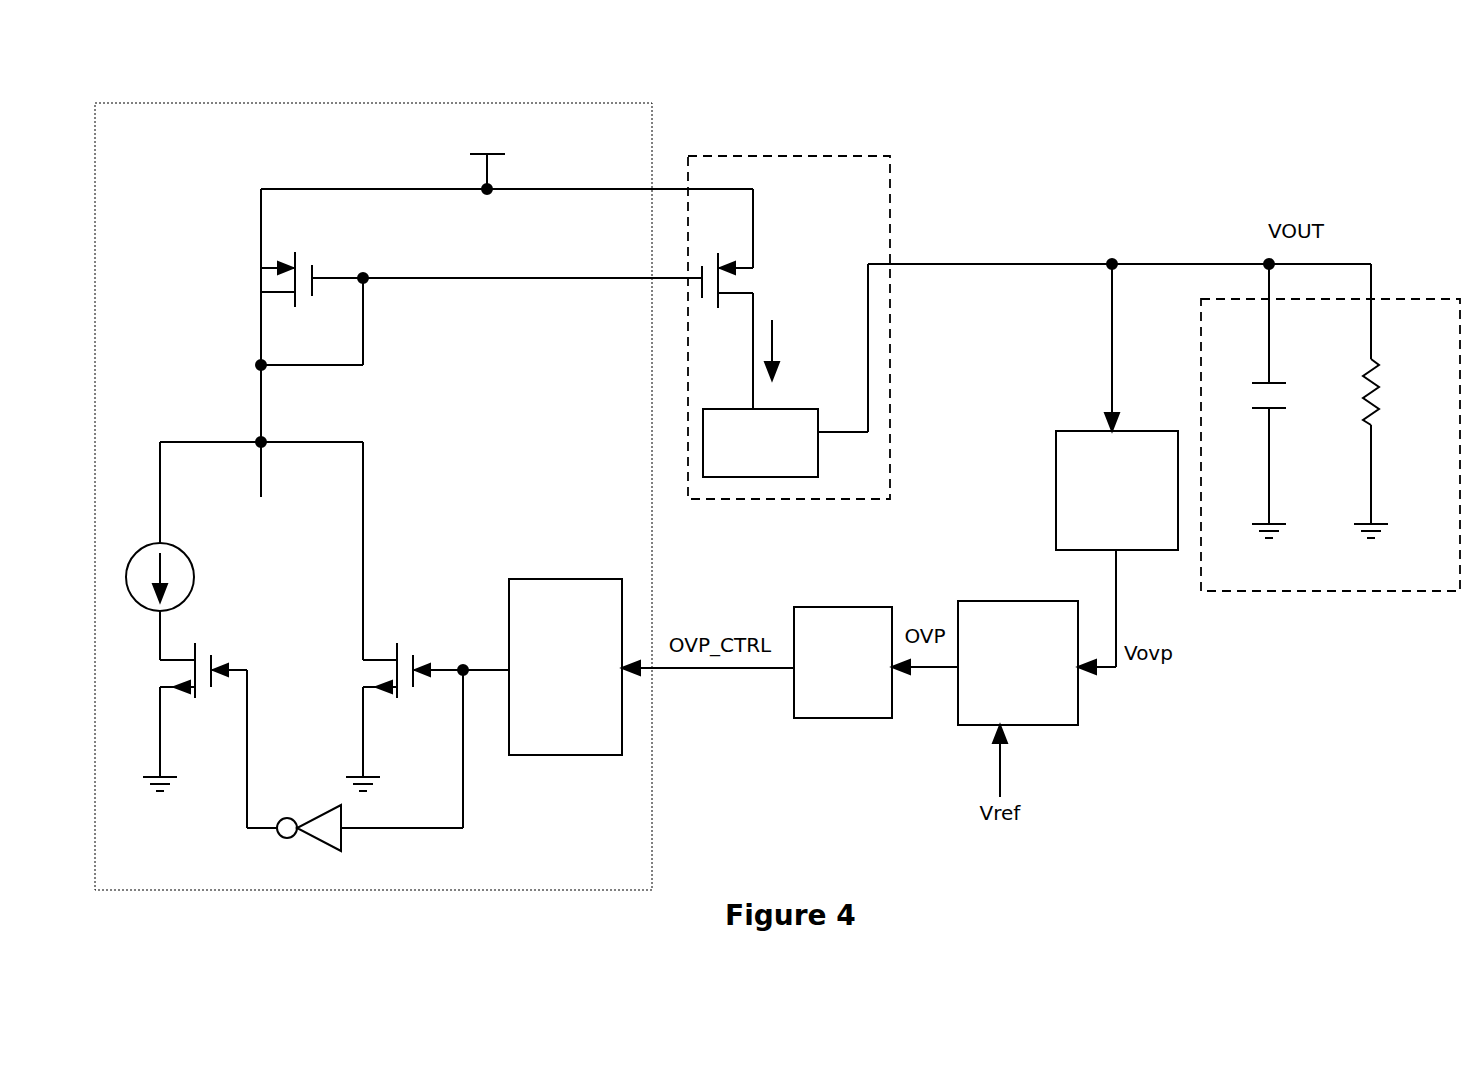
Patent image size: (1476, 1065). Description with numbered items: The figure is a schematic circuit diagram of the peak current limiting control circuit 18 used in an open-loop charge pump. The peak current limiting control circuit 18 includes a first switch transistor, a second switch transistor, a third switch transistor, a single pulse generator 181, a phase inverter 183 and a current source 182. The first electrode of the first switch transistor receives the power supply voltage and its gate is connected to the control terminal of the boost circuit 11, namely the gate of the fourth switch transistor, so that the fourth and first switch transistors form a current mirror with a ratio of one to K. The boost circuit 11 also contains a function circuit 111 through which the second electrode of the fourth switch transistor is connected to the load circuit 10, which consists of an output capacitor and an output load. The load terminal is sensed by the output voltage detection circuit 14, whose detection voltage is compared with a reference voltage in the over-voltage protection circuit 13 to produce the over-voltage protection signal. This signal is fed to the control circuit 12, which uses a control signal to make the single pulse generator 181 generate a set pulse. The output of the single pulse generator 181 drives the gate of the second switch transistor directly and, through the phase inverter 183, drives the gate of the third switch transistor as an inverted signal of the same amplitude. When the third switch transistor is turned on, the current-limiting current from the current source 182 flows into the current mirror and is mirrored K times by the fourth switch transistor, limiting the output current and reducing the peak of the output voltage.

The load circuit 10 is at (1270, 591).
The boost circuit 11 is at (779, 156).
The function circuit 111 is at (750, 477).
The control circuit 12 is at (835, 607).
The over-voltage protection circuit 13 is at (1000, 601).
The output voltage detection circuit 14 is at (1056, 478).
The peak current limiting control circuit 18 is at (251, 103).
The single pulse generator 181 is at (540, 579).
The current source 182 is at (183, 543).
The phase inverter 183 is at (341, 850).